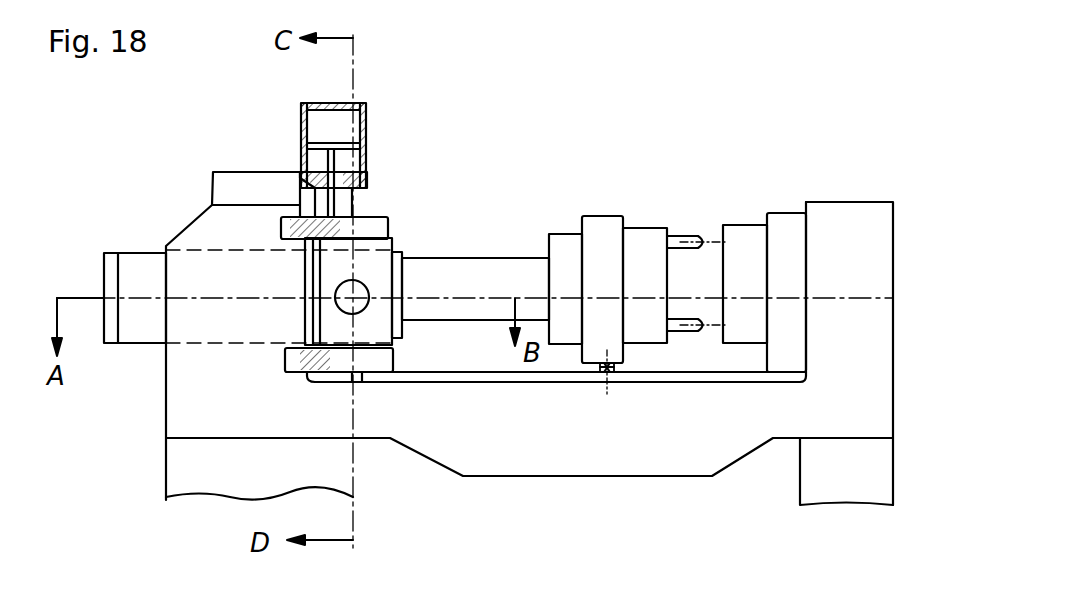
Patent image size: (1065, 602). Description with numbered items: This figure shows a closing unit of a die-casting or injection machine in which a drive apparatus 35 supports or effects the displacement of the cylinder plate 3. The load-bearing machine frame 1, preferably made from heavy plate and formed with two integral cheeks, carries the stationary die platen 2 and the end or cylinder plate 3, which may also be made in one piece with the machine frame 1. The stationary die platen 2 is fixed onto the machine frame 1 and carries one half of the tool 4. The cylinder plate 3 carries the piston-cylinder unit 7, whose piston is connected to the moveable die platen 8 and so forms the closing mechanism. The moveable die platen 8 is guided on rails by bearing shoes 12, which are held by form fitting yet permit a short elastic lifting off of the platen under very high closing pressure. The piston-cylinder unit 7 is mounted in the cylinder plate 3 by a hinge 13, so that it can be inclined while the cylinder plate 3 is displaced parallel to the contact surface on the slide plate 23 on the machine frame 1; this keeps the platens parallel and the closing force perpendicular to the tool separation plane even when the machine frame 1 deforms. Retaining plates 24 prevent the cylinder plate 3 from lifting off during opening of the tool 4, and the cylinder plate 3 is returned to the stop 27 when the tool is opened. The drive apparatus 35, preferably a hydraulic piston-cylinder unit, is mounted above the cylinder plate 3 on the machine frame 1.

The machine frame 1 is at (190, 397).
The stationary die platen 2 is at (788, 237).
The cylinder plate 3 is at (375, 265).
The tool 4 is at (651, 244).
The piston-cylinder unit 7 is at (138, 282).
The moveable die platen 8 is at (598, 232).
The bearing shoe 12 is at (622, 382).
The hinge 13 is at (360, 302).
The slide plate 23 is at (312, 272).
The retaining plate 24 is at (348, 133).
The stop 27 is at (353, 375).
The drive apparatus 35 is at (305, 108).